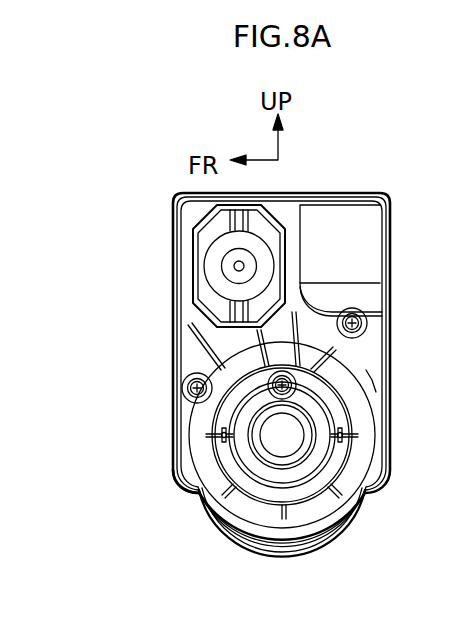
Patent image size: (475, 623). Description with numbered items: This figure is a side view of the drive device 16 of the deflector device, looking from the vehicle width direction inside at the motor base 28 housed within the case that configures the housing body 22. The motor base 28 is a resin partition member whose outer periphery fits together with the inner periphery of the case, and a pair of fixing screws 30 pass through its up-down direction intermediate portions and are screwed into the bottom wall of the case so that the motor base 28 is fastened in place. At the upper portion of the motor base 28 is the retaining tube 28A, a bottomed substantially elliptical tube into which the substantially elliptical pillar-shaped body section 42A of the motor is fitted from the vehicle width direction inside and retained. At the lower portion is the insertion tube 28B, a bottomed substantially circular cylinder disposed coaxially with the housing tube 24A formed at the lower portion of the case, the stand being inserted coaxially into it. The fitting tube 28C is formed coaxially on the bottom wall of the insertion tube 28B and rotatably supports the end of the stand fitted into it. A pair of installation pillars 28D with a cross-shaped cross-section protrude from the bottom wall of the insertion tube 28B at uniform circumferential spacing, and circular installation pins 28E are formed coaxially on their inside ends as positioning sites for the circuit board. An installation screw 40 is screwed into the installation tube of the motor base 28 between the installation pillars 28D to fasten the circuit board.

The drive device 16 is at (145, 160).
The housing body 22 is at (345, 193).
The housing tube 24A is at (215, 512).
The motor base 28 is at (257, 510).
The retaining tube 28A is at (193, 258).
The insertion tube 28B is at (307, 505).
The fitting tube 28C is at (287, 445).
The installation pillars 28D is at (347, 405).
The installation pins 28E is at (352, 447).
The fixing screws 30 is at (365, 318).
The installation screw 40 is at (366, 388).
The body section 42A is at (200, 236).